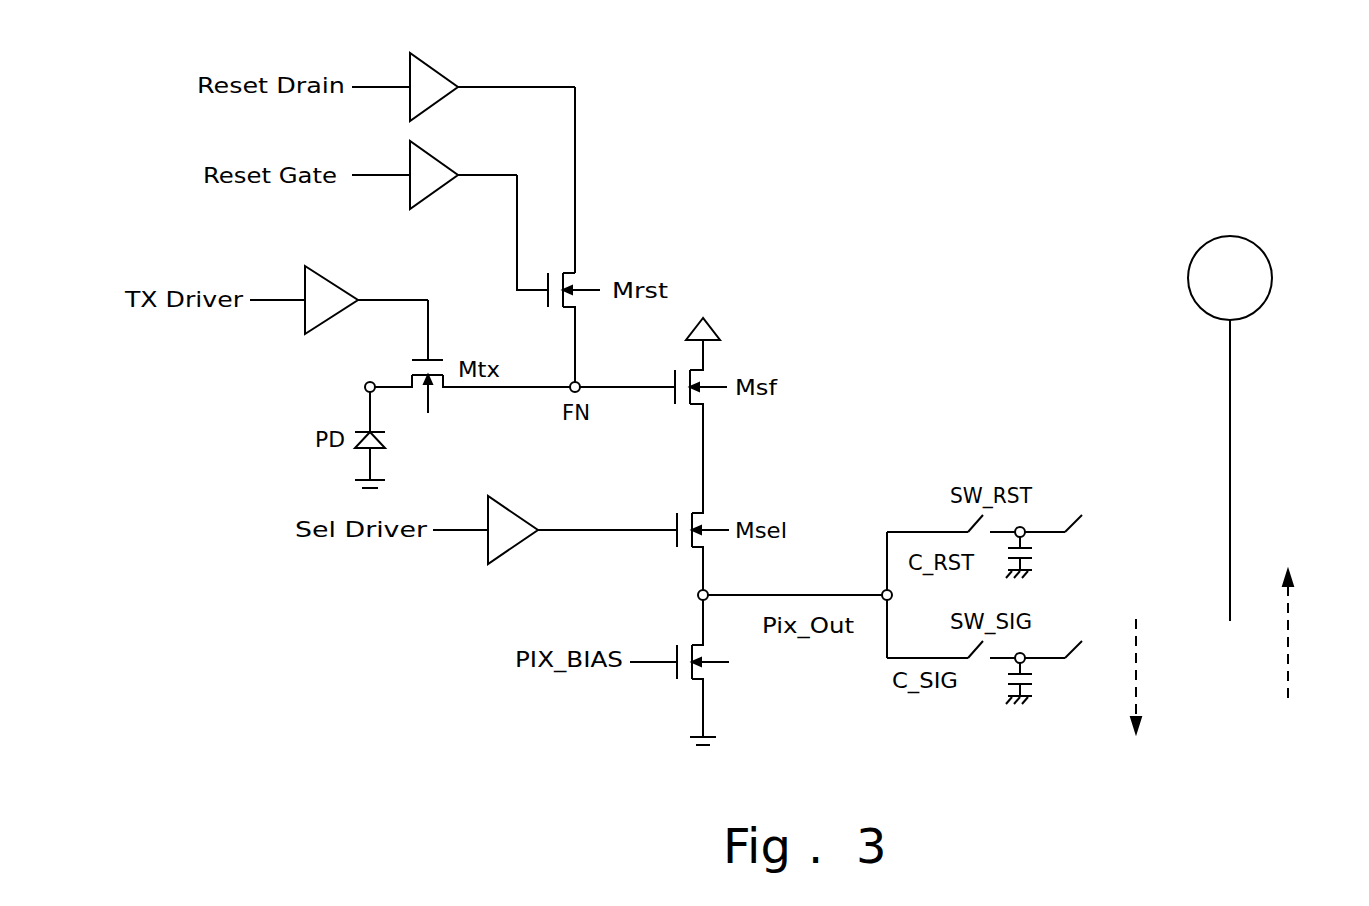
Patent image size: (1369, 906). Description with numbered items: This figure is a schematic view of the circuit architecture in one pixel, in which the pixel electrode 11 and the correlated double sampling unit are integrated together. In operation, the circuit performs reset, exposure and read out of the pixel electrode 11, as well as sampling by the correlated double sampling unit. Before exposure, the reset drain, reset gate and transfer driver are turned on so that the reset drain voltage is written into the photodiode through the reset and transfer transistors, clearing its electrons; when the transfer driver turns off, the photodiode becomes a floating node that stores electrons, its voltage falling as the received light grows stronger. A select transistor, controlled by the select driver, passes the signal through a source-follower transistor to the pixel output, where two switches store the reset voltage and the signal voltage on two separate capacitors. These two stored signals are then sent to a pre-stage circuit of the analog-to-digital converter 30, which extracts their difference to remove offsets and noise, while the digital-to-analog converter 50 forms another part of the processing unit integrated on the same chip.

The pixel electrode 11 is at (1230, 428).
The analog-to-digital converter 30 is at (1136, 673).
The digital-to-analog converter 50 is at (1288, 624).